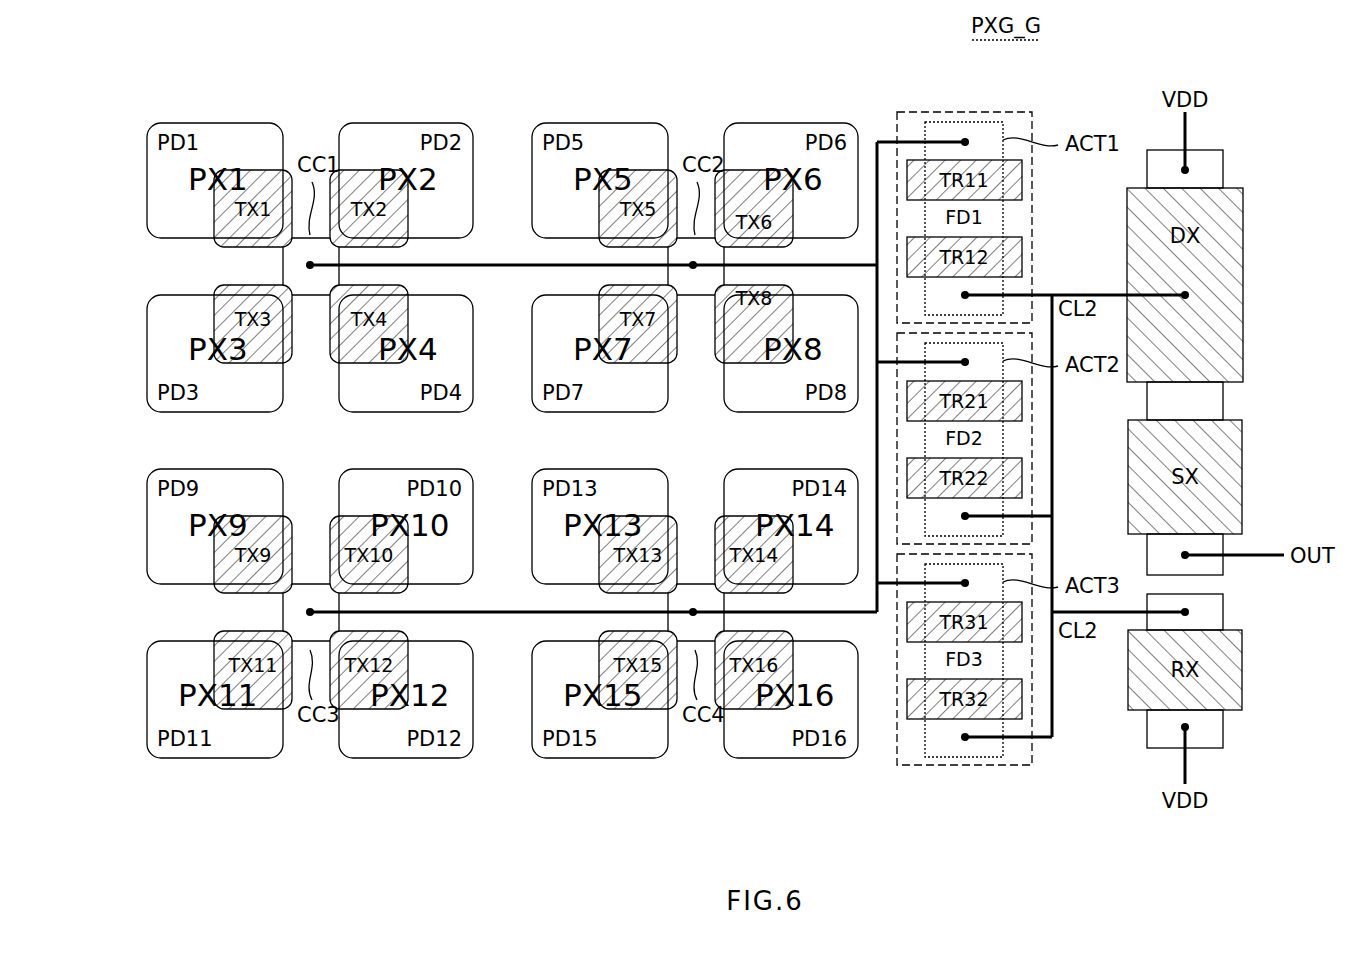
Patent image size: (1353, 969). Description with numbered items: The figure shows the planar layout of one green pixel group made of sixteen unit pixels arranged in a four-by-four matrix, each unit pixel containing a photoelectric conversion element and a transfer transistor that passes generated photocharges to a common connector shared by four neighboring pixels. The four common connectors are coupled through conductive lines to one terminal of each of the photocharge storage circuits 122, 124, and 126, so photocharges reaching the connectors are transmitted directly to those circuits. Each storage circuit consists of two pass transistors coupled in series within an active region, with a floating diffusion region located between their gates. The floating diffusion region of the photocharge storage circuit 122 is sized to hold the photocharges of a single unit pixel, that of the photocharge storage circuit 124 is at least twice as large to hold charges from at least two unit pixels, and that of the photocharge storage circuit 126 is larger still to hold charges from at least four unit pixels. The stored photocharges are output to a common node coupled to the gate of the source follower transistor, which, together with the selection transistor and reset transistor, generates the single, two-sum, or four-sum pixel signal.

The photocharge storage circuit 122 is at (965, 112).
The photocharge storage circuit 124 is at (1032, 438).
The photocharge storage circuit 126 is at (965, 767).